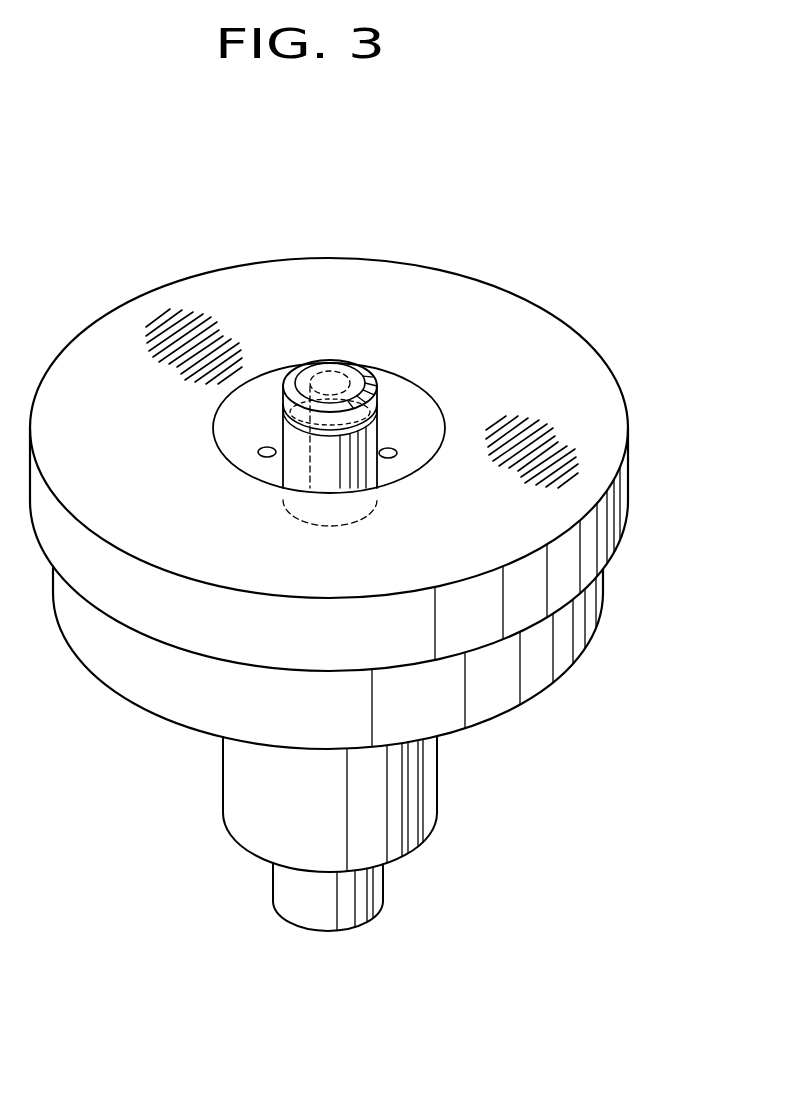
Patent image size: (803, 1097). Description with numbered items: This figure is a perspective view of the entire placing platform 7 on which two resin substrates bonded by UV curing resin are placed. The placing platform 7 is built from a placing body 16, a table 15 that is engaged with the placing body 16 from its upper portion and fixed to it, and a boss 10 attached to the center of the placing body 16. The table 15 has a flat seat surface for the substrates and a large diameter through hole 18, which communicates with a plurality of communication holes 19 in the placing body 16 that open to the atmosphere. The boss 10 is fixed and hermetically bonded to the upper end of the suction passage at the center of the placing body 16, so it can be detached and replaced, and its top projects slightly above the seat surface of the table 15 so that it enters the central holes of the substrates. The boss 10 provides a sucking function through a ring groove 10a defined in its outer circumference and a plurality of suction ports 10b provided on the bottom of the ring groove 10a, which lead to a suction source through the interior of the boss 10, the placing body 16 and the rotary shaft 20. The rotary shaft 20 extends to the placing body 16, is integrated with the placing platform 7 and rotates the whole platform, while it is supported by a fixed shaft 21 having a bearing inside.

The placing platform 7 is at (130, 286).
The boss 10 is at (348, 367).
The ring groove 10a is at (380, 418).
The suction ports 10b is at (300, 430).
The table 15 is at (607, 547).
The placing body 16 is at (557, 677).
The large diameter through hole 18 is at (262, 470).
The communication holes 19 is at (258, 453).
The rotary shaft 20 is at (372, 887).
The fixed shaft 21 is at (232, 772).